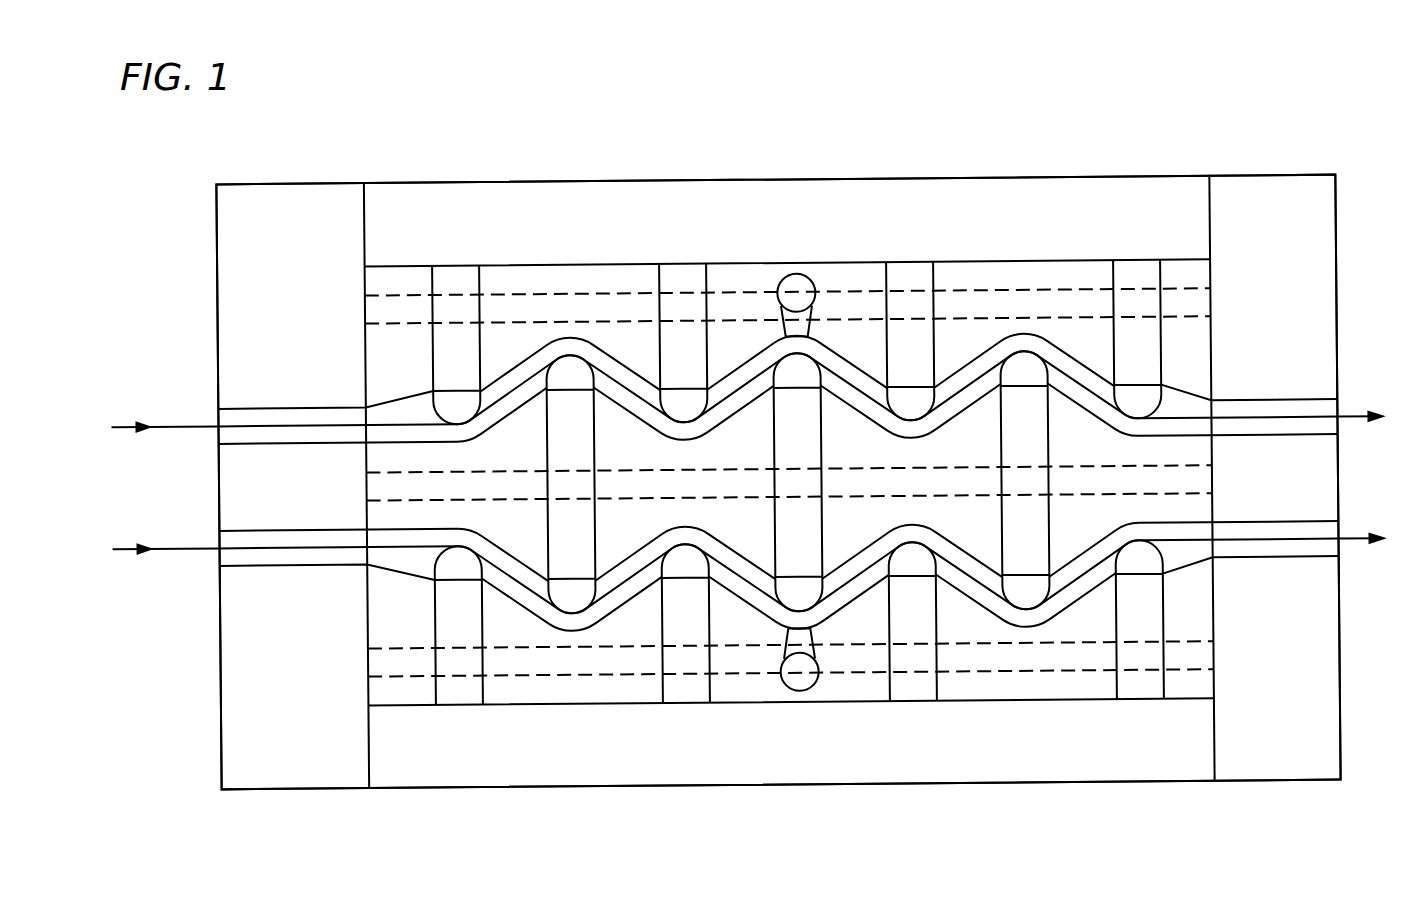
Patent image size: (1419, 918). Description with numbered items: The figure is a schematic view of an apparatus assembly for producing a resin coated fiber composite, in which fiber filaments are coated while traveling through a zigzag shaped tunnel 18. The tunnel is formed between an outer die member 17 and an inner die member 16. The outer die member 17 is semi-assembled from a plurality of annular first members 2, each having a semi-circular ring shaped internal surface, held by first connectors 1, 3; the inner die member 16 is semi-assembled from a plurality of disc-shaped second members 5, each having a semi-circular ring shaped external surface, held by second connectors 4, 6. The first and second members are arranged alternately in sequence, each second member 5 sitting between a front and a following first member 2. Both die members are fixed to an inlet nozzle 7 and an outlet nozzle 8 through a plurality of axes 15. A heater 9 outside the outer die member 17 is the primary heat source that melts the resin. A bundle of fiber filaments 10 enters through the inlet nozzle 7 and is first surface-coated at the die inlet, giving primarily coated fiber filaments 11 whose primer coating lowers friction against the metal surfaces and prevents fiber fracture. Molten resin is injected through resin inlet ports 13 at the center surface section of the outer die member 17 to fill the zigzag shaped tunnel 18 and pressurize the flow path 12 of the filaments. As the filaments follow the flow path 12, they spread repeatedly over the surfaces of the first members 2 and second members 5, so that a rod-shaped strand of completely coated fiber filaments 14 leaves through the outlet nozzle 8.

The first connector 1 is at (778, 479).
The first member 2 is at (798, 482).
The first connector 3 is at (789, 469).
The second connector 4 is at (777, 413).
The second member 5 is at (797, 482).
The second connector 6 is at (778, 497).
The inlet nozzle 7 is at (292, 486).
The outlet nozzle 8 is at (1274, 478).
The heater 9 is at (789, 482).
The bundle of fiber filaments 10 is at (175, 420).
The primarily coated fiber filaments 11 is at (383, 423).
The flow path 12 is at (407, 554).
The resin inlet port 13 is at (798, 274).
The completely coated fiber filaments 14 is at (1349, 421).
The axis 15 is at (602, 303).
The inner die member 16 is at (1062, 410).
The outer die member 17 is at (1025, 277).
The zigzag shaped tunnel 18 is at (235, 427).